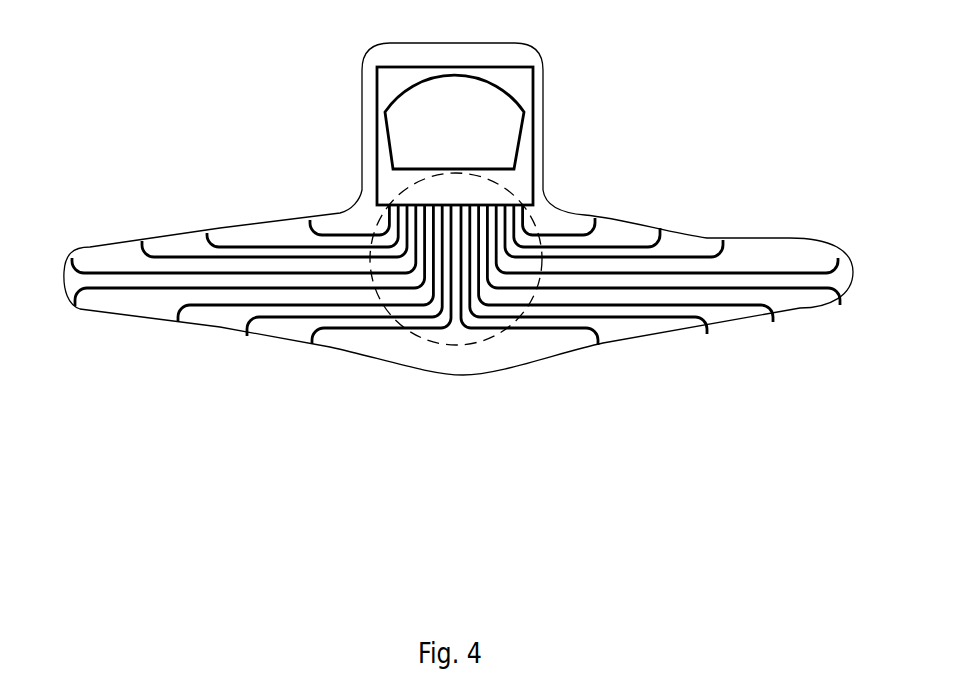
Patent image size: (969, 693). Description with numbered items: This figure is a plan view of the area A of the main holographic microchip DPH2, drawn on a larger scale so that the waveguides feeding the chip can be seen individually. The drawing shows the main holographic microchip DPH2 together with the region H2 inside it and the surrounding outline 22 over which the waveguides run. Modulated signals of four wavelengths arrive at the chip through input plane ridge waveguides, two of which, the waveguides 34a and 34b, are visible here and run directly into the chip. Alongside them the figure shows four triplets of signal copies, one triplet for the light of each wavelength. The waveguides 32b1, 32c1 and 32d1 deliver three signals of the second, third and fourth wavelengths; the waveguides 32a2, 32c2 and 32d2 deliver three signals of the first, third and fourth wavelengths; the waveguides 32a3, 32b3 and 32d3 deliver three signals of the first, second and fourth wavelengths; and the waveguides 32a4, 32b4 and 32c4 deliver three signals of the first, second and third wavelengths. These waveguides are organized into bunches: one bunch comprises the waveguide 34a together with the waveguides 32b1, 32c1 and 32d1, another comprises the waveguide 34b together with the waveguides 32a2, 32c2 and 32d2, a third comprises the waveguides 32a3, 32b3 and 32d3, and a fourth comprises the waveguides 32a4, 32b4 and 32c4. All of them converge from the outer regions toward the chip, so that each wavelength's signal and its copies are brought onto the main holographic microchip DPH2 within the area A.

The substrate / flexible circuit outline 22 is at (515, 352).
The area A is at (423, 340).
The main holographic microchip DPH2 is at (375, 88).
The second display region H2 is at (478, 98).
The input plane ridge waveguide 34a is at (341, 236).
The input plane ridge waveguide 34b is at (565, 233).
The waveguide 32a2 is at (648, 232).
The waveguide 32a3 is at (110, 291).
The waveguide 32a4 is at (798, 288).
The waveguide 32b1 is at (93, 273).
The waveguide 32b3 is at (197, 306).
The waveguide 32b4 is at (753, 308).
The waveguide 32c1 is at (167, 255).
The waveguide 32c2 is at (707, 248).
The waveguide 32c4 is at (687, 318).
The waveguide 32d1 is at (240, 246).
The waveguide 32d2 is at (773, 272).
The waveguide 32d3 is at (272, 316).